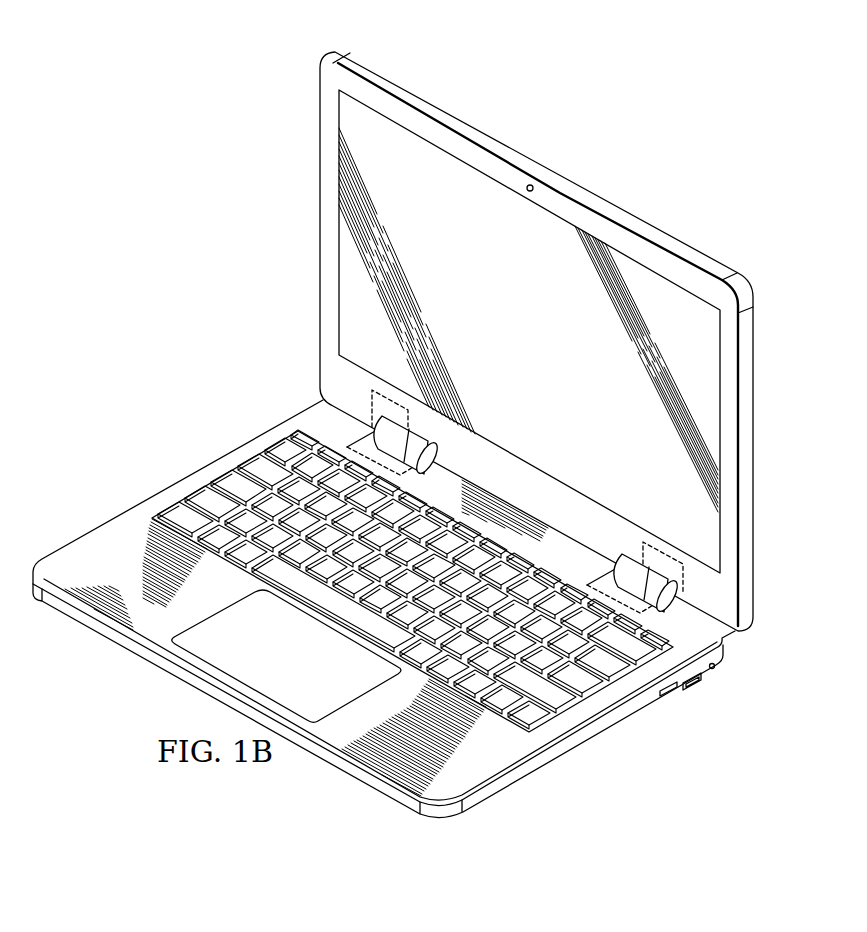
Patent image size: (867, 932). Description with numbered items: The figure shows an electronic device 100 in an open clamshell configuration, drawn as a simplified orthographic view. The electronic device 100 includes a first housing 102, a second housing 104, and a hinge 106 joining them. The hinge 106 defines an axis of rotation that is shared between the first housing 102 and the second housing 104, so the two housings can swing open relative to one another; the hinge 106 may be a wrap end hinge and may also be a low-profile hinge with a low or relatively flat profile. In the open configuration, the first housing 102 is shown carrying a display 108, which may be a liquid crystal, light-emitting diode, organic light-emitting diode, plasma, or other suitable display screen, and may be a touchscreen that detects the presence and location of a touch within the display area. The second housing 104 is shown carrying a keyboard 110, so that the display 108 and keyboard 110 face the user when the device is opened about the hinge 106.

The computing device 100 is at (218, 60).
The display housing 102 is at (536, 341).
The base housing 104 is at (121, 523).
The hinge 106 is at (352, 390).
The display 108 is at (461, 181).
The keyboard 110 is at (236, 456).